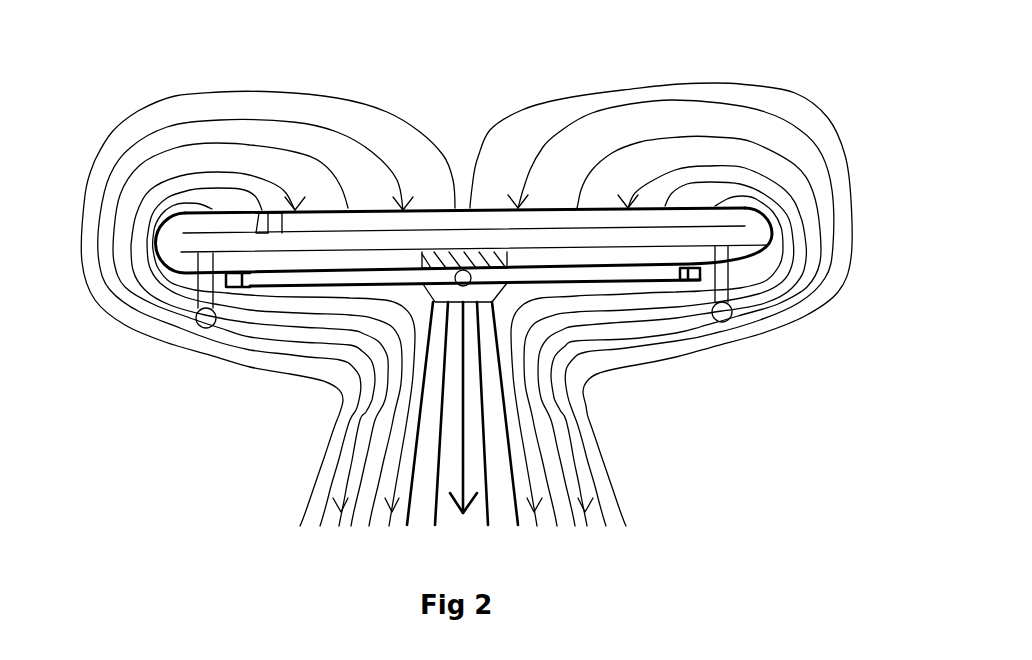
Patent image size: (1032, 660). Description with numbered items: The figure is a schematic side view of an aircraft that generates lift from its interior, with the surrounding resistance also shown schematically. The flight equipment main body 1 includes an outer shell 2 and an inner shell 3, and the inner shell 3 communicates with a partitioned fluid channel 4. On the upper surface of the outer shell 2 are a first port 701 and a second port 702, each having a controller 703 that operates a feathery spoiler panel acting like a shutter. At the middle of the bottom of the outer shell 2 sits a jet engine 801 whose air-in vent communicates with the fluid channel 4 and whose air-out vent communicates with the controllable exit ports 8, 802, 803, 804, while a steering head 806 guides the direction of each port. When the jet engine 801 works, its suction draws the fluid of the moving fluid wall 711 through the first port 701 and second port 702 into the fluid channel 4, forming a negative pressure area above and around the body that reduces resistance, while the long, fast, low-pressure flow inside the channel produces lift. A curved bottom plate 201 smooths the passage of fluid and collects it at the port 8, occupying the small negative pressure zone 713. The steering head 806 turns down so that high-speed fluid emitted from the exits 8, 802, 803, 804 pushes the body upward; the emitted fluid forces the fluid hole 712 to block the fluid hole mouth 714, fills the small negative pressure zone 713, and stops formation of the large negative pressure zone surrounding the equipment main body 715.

The flight equipment main body 1 is at (177, 247).
The outer shell 2 is at (524, 210).
The inner shell 3 is at (377, 230).
The fluid channel 4 is at (582, 211).
The port 8 is at (455, 312).
The curved bottom plate 201 is at (198, 262).
The first port 701 is at (328, 210).
The second port 702 is at (280, 208).
The controller 703 is at (255, 228).
The moving fluid wall 711 is at (467, 207).
The fluid hole 712 is at (740, 258).
The small negative pressure zone 713 is at (497, 364).
The fluid hole mouth 714 is at (483, 484).
The large negative pressure zone surrounding the equipment main body 715 is at (772, 233).
The jet engine 801 is at (467, 252).
The port 802 is at (703, 277).
The port 803 is at (469, 284).
The port 804 is at (226, 280).
The steering head 806 is at (199, 325).